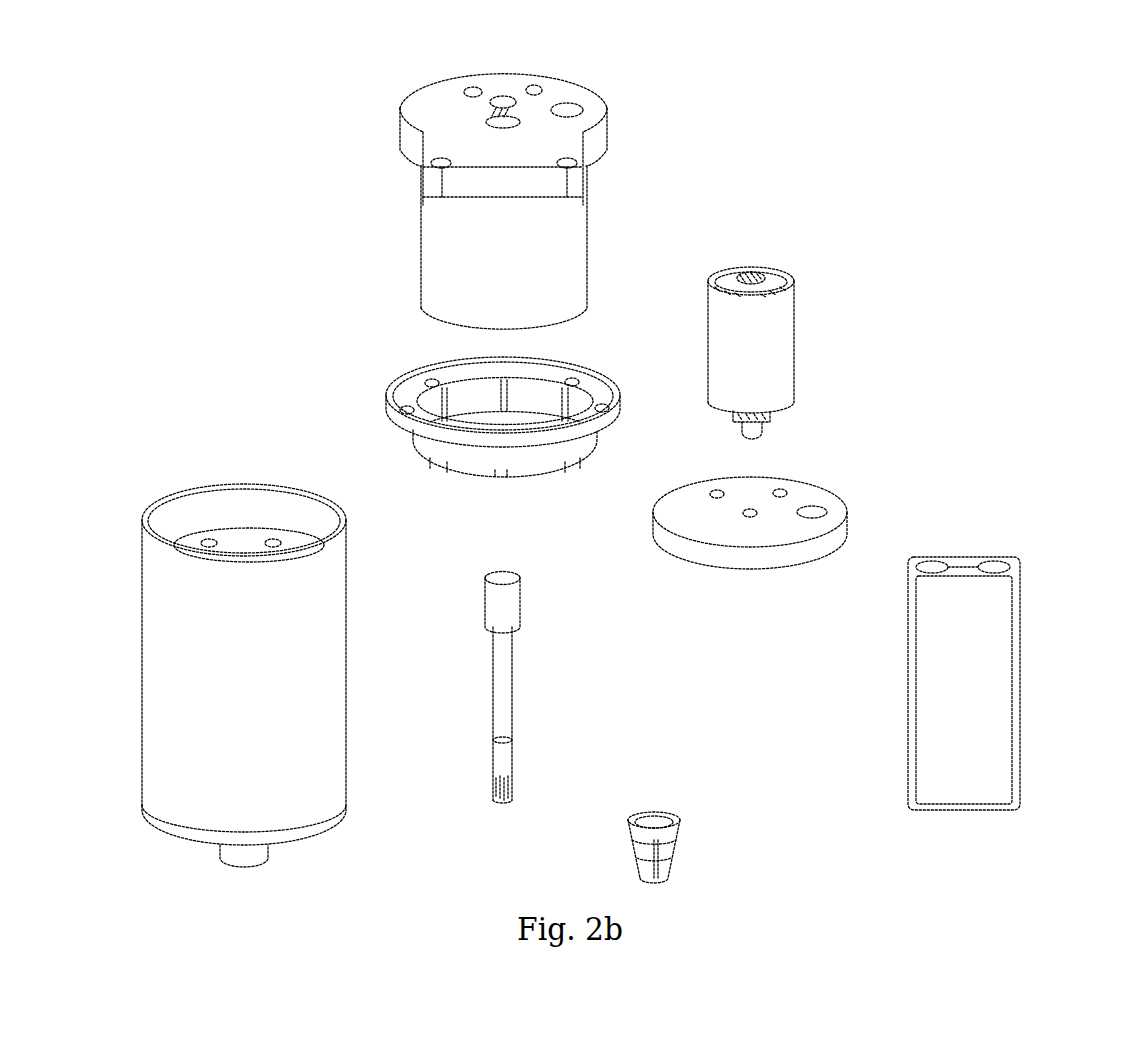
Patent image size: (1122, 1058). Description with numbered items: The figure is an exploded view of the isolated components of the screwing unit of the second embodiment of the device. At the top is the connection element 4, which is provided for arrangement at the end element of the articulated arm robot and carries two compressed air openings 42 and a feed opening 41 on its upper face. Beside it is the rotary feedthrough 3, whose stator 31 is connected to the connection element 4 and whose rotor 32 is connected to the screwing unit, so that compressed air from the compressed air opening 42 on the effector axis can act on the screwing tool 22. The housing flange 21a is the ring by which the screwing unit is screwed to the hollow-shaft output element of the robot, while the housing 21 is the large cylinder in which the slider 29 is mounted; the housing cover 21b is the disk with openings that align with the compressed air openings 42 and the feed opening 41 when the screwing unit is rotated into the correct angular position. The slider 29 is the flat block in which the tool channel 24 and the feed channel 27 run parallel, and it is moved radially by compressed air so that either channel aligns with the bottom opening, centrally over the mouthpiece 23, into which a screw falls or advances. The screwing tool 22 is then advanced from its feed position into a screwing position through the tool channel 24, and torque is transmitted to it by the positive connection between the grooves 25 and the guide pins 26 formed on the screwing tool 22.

The rotary feedthrough 3 is at (781, 264).
The connection element 4 is at (401, 104).
The housing 21 is at (148, 508).
The housing flange 21a is at (390, 392).
The housing cover 21b is at (670, 565).
The screwing tool 22 is at (484, 652).
The mouthpiece 23 is at (662, 816).
The tool channel 24 is at (933, 566).
The grooves 25 is at (952, 575).
The guide pins 26 is at (520, 582).
The feed channel 27 is at (997, 565).
The slider 29 is at (970, 557).
The stator 31 is at (773, 352).
The rotor 32 is at (755, 428).
The feed opening 41 is at (570, 106).
The compressed air openings 42 is at (475, 87).